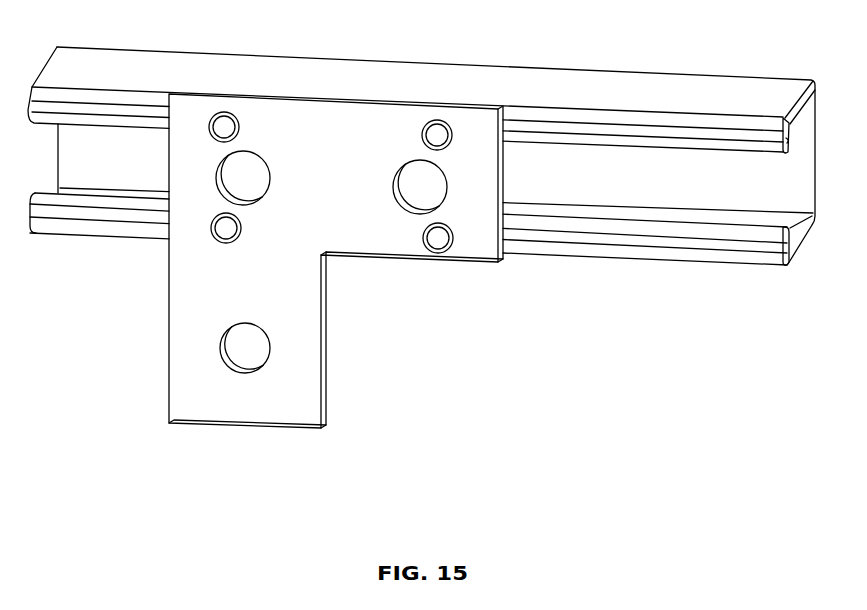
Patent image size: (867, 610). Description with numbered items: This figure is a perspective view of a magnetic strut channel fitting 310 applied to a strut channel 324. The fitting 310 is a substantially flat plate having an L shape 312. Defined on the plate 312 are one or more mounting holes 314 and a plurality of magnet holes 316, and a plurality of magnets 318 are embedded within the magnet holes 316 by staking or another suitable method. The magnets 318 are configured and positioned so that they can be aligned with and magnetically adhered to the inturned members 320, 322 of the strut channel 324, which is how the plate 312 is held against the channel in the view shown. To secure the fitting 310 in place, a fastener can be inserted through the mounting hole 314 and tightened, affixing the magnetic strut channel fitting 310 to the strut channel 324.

The magnetic strut channel fitting 310 is at (303, 222).
The L shape plate 312 is at (340, 130).
The mounting hole 314 is at (220, 360).
The magnet holes 316 is at (210, 227).
The magnets 318 is at (224, 118).
The inturned member 320 is at (753, 138).
The inturned member 322 is at (742, 248).
The strut channel 324 is at (421, 170).